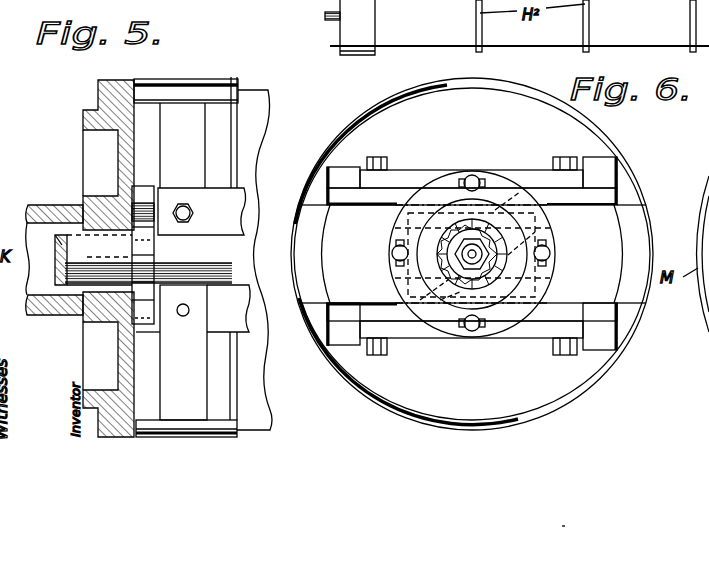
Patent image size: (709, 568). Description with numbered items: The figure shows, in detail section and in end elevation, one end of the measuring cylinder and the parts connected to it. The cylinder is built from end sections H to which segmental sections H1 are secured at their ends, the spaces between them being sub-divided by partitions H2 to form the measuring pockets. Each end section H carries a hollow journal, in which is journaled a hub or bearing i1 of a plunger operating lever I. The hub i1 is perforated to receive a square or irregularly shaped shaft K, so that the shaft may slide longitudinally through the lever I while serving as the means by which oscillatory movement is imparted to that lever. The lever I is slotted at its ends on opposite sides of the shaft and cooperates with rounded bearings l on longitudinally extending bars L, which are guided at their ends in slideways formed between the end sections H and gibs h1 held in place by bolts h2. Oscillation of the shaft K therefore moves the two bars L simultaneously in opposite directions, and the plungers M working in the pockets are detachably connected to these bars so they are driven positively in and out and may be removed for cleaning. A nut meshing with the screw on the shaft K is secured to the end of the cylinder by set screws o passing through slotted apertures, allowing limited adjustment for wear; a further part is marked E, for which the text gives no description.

In FIG. 5, the end section H is at (83, 131).
In FIG. 6, the end section H is at (444, 254).
In FIG. 5, the shaft K is at (55, 257).
In FIG. 5, the hub or bearing i1 is at (97, 274).
In FIG. 5, the rounded bearing l is at (148, 205).
In FIG. 6, the rounded bearing l is at (513, 193).
In FIG. 5, the plunger M is at (151, 80).
In FIG. 6, the plunger M is at (387, 218).
In FIG. 5, the longitudinally extending bar L is at (178, 188).
In FIG. 5, the rim / post E is at (224, 237).
In FIG. 6, the rim / post E is at (472, 254).
In FIG. 5, the partition H2 is at (240, 146).
In FIG. 5, the plunger operating lever I is at (147, 258).
In FIG. 6, the segmental section H1 is at (522, 86).
In FIG. 6, the bolt h2 is at (352, 168).
In FIG. 6, the gib h1 is at (406, 175).
In FIG. 6, the set screw o is at (474, 175).